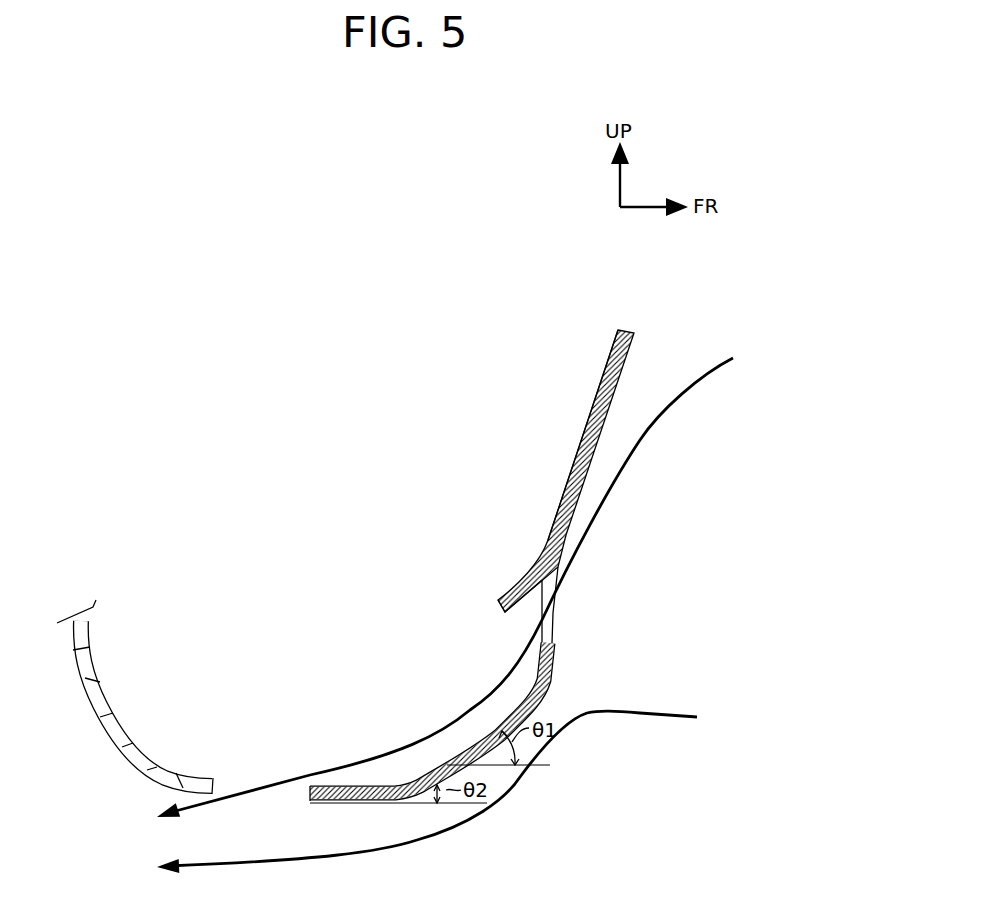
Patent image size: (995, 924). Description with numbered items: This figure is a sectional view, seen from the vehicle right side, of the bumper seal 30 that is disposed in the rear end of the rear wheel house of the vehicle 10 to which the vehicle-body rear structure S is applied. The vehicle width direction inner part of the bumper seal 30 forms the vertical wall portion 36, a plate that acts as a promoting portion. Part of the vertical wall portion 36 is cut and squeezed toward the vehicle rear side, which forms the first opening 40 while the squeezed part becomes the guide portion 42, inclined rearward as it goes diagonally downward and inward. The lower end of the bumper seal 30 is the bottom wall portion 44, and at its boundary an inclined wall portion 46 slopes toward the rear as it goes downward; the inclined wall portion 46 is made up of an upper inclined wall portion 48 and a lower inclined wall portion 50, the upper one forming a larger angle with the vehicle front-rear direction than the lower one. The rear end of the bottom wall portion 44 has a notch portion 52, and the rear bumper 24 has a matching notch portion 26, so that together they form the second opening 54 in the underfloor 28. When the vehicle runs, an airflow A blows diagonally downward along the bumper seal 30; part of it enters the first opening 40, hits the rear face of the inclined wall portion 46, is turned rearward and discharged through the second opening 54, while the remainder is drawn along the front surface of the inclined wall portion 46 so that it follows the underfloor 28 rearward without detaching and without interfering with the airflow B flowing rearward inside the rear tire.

The vehicle 10 is at (557, 314).
The rear bumper 24 is at (107, 728).
The notch portion 26 is at (220, 783).
The underfloor 28 is at (180, 788).
The bumper seal 30 is at (637, 338).
The vertical wall portion 36 is at (591, 415).
The first opening 40 is at (556, 634).
The guide portion 42 is at (527, 603).
The bottom wall portion 44 is at (360, 803).
The inclined wall portion 46 is at (463, 770).
The upper inclined wall portion 48 is at (534, 705).
The lower inclined wall portion 50 is at (417, 792).
The notch portion 52 is at (309, 797).
The second opening 54 is at (245, 787).
The airflow A is at (676, 393).
The airflow B is at (658, 718).
The vehicle-body rear structure S is at (562, 824).